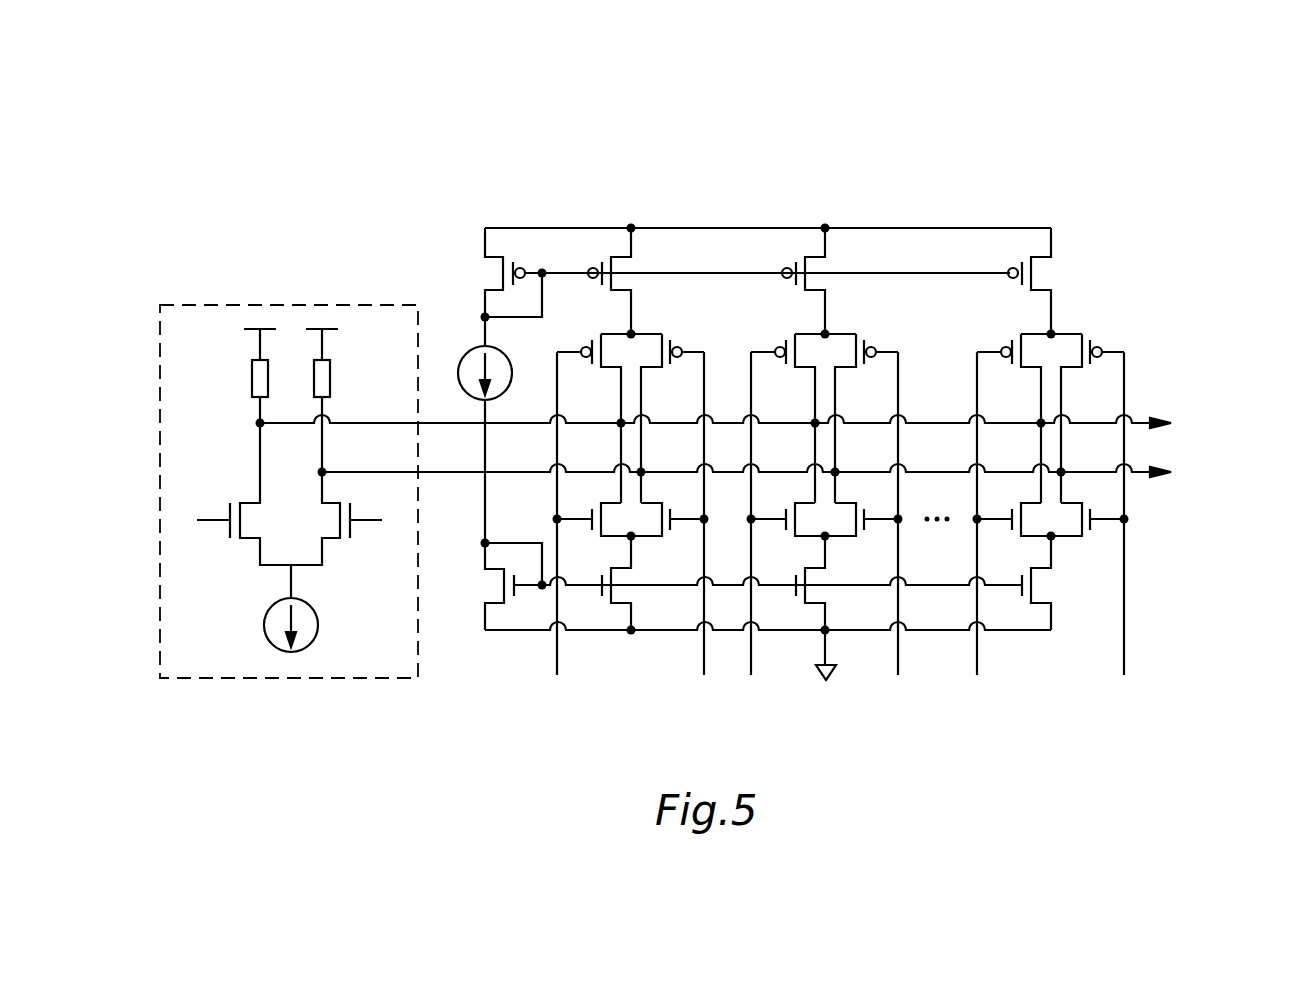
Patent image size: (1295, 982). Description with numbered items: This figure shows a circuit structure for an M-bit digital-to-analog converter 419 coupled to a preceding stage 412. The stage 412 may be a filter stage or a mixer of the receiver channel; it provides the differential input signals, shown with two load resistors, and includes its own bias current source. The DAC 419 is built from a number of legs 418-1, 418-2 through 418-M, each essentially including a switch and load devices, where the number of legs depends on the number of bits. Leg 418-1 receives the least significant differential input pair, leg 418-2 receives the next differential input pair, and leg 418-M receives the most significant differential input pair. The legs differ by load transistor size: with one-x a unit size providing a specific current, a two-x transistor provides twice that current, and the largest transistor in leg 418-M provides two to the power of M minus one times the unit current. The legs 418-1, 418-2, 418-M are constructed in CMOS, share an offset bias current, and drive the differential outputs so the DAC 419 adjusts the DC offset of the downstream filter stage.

The stage 412 is at (289, 305).
The leg 418-1 is at (643, 205).
The leg 418-2 is at (837, 205).
The leg 418-M is at (1062, 205).
The digital-to-analog converter 419 is at (1208, 66).